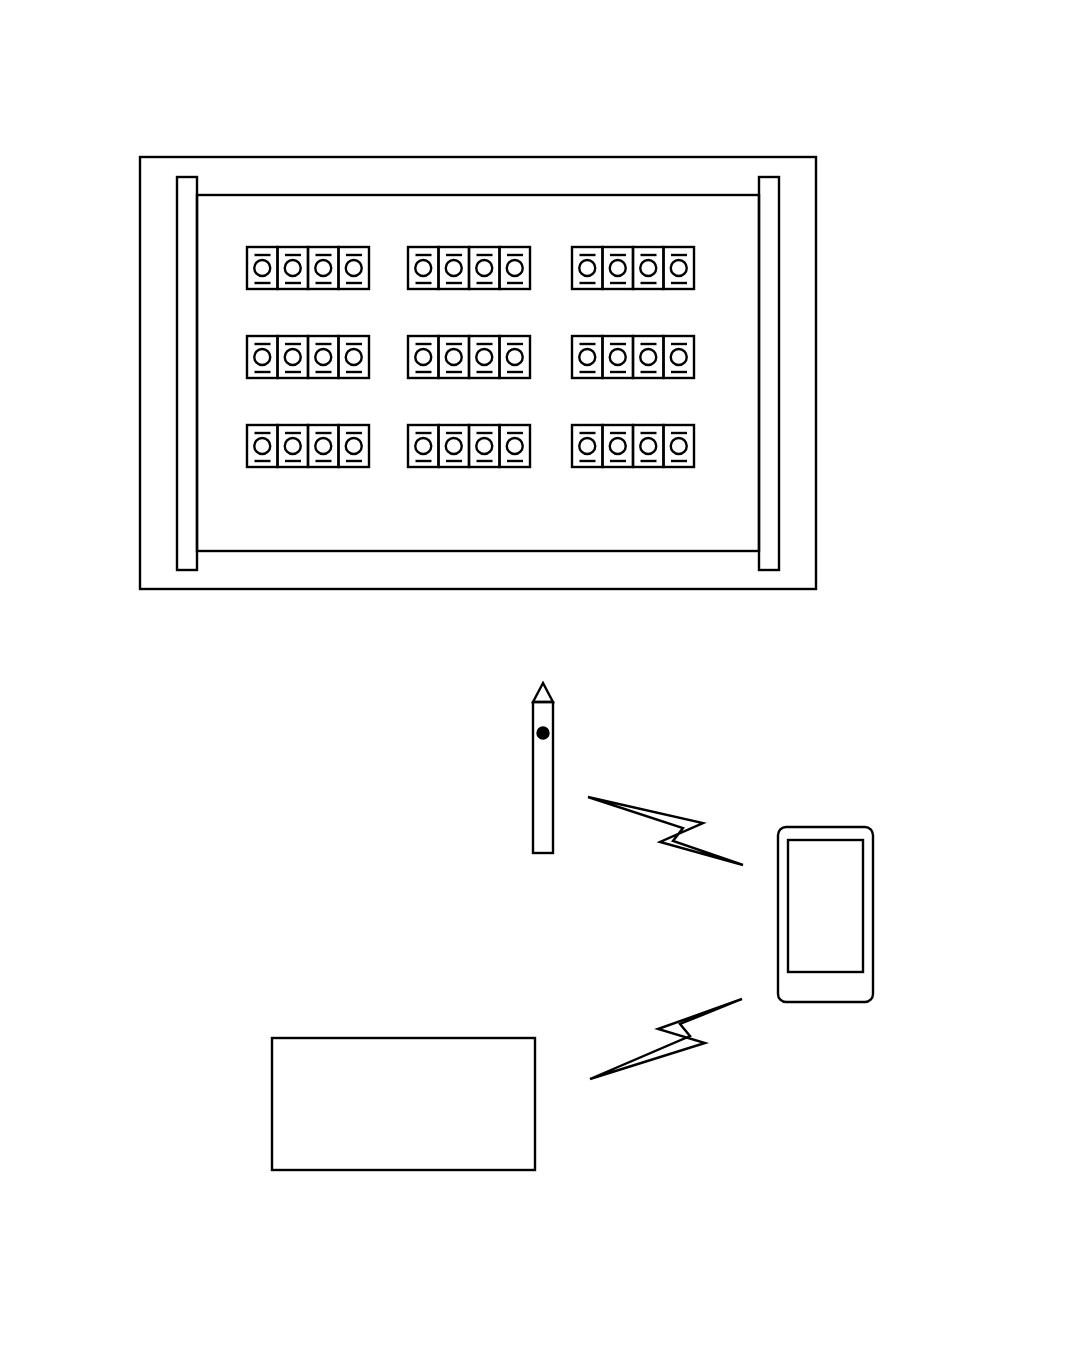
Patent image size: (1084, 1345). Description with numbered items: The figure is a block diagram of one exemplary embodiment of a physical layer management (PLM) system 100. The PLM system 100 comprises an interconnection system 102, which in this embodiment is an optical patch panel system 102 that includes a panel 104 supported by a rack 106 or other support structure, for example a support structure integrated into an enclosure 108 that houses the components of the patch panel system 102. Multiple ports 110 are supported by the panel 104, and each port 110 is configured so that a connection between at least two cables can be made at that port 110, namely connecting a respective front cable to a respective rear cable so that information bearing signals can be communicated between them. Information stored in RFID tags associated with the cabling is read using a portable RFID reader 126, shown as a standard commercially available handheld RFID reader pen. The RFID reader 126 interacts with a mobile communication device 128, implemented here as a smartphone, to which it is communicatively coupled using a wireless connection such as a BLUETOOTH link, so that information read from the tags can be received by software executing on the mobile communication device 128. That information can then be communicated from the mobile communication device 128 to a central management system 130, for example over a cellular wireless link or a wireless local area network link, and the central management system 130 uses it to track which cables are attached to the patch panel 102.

The physical layer management (PLM) system 100 is at (549, 32).
The interconnection system 102 is at (336, 116).
The panel 104 is at (250, 515).
The rack 106 is at (779, 393).
The enclosure 108 is at (817, 237).
The ports 110 is at (507, 247).
The portable RFID reader 126 is at (534, 813).
The mobile communication device 128 is at (873, 900).
The central management system 130 is at (384, 1156).